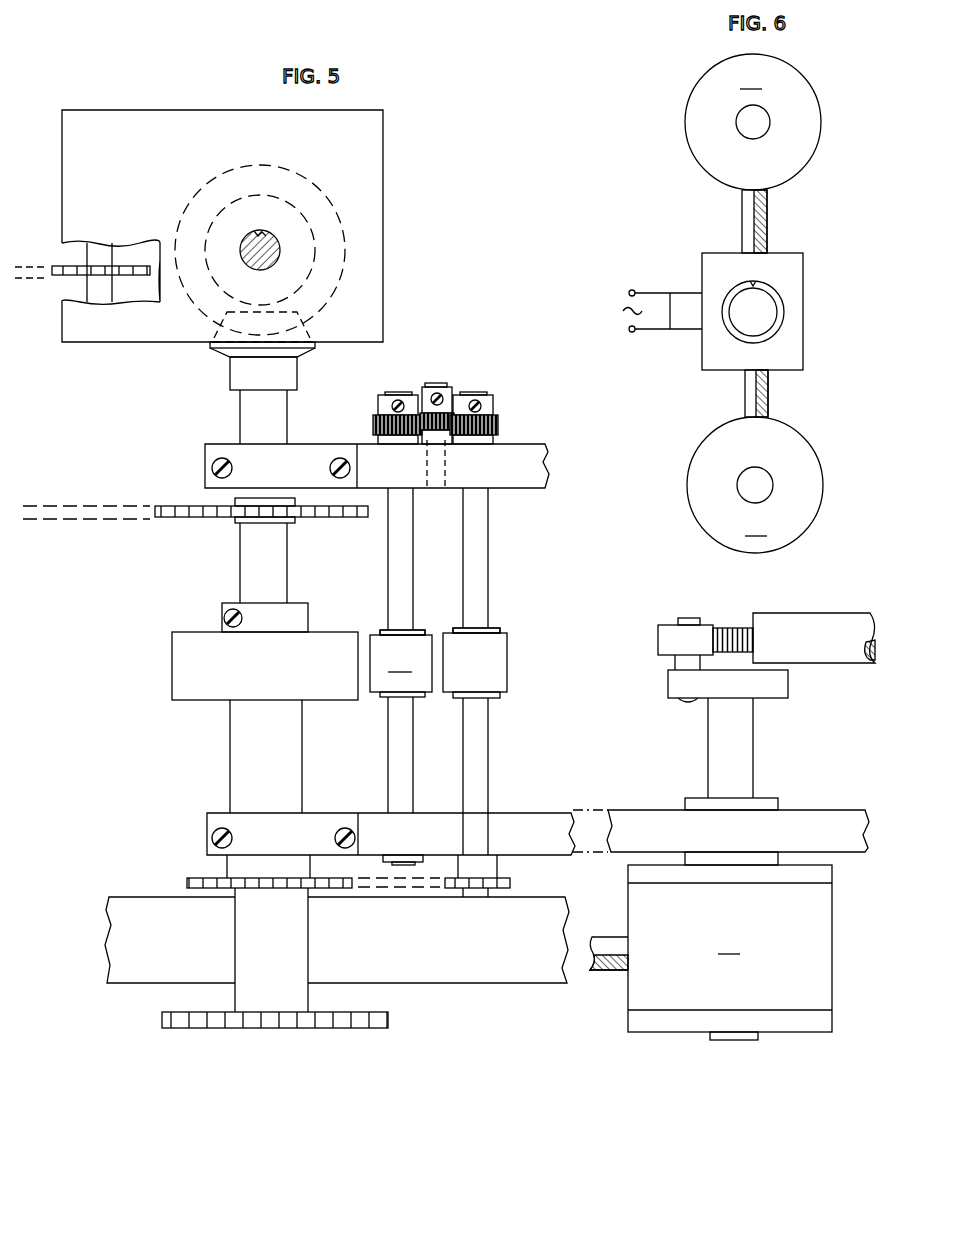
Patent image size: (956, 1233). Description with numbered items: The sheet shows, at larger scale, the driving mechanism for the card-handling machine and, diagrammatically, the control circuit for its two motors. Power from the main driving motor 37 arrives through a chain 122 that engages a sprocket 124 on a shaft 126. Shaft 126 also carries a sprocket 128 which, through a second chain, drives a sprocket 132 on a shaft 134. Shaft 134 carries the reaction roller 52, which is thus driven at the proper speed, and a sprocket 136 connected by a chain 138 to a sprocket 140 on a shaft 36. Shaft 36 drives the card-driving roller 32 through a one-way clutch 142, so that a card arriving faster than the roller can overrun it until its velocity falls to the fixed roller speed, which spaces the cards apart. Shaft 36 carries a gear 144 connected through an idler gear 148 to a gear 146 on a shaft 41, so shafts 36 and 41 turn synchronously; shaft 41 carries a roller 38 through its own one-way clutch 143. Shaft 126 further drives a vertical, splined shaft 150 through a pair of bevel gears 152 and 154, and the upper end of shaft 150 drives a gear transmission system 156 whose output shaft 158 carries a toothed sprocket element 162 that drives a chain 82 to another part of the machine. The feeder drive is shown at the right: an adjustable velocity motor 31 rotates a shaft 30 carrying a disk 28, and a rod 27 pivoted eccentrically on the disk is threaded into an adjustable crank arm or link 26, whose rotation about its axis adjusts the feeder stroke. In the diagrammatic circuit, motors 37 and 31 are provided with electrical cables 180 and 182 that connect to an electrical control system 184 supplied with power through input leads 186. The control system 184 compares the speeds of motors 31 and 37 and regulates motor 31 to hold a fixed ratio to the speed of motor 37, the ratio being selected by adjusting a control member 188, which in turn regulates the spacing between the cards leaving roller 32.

In FIG. 5, the gear transmission system 156 is at (115, 123).
In FIG. 5, the output shaft 158 is at (110, 255).
In FIG. 5, the gear 162 is at (123, 277).
In FIG. 5, the chain 82 is at (42, 281).
In FIG. 5, the vertical splined shaft 150 is at (274, 236).
In FIG. 5, the bevel gear 154 is at (283, 175).
In FIG. 5, the bevel gear 152 is at (312, 337).
In FIG. 5, the shaft 126 is at (250, 424).
In FIG. 5, the gear 146 is at (376, 425).
In FIG. 5, the idler gear 148 is at (437, 432).
In FIG. 5, the gear 144 is at (500, 425).
In FIG. 5, the sprocket 124 is at (200, 517).
In FIG. 5, the chain 122 is at (112, 522).
In FIG. 5, the reaction roller 52 is at (183, 677).
In FIG. 5, the shaft 134 is at (243, 785).
In FIG. 5, the shaft 41 is at (395, 588).
In FIG. 5, the shaft 36 is at (483, 771).
In FIG. 5, the roller 38 is at (401, 663).
In FIG. 5, the one-way clutch 143 is at (418, 630).
In FIG. 5, the driving roller 32 is at (500, 650).
In FIG. 5, the one-way clutch 142 is at (493, 628).
In FIG. 5, the sprocket 136 is at (190, 884).
In FIG. 5, the sprocket 140 is at (510, 883).
In FIG. 5, the chain 138 is at (400, 890).
In FIG. 5, the sprocket 132 is at (300, 1018).
In FIG. 5, the sprocket 128 is at (390, 1022).
In FIG. 5, the rod 27 is at (740, 628).
In FIG. 5, the adjustable crank arm or link 26 is at (795, 627).
In FIG. 5, the disk 28 is at (785, 686).
In FIG. 5, the shaft 30 is at (743, 751).
In FIG. 5, the adjustable velocity motor 31 is at (730, 952).
In FIG. 6, the adjustable velocity motor 31 is at (753, 122).
In FIG. 5, the electrical cable 182 is at (620, 972).
In FIG. 6, the electrical cable 182 is at (768, 210).
In FIG. 6, the electrical control system 184 is at (790, 278).
In FIG. 6, the control member 188 is at (778, 333).
In FIG. 6, the input leads 186 is at (670, 293).
In FIG. 6, the electrical cable 180 is at (770, 390).
In FIG. 6, the main driving motor 37 is at (755, 485).